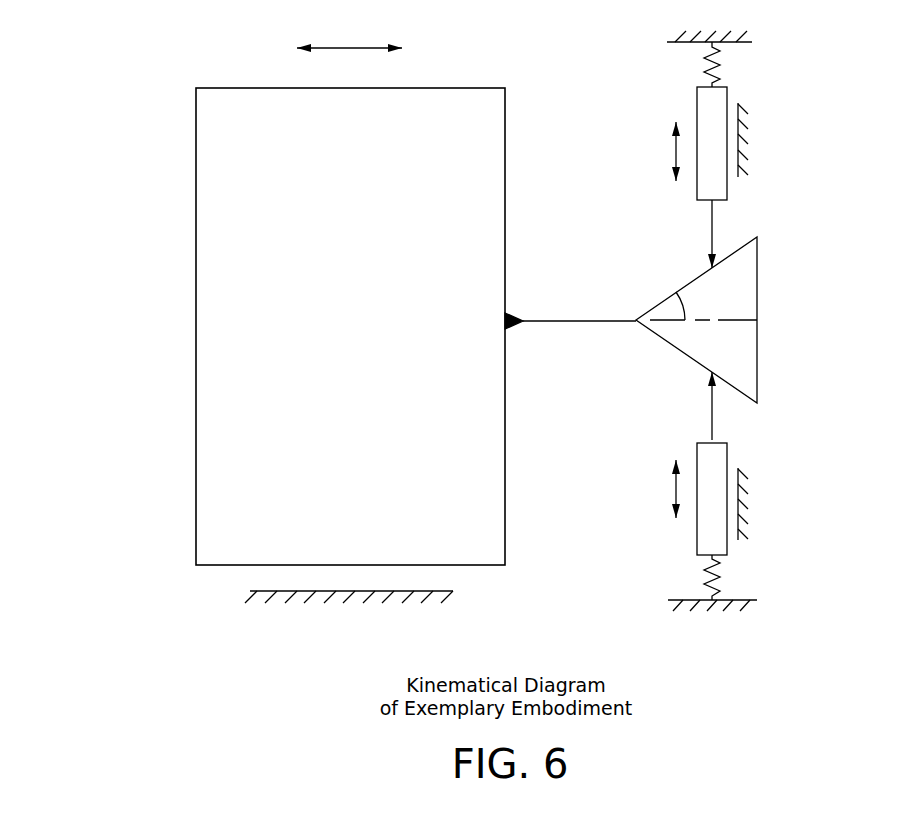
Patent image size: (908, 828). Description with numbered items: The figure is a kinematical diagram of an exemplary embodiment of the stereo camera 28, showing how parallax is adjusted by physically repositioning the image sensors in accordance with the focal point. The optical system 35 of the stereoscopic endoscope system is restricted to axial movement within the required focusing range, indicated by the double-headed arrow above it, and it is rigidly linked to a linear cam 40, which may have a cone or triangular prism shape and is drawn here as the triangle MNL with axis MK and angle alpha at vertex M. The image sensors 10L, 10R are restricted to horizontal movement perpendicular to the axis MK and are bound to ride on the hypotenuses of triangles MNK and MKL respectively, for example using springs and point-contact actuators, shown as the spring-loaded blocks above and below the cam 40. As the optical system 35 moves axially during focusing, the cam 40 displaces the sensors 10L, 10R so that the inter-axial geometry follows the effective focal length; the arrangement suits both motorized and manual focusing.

The right image sensor 10R is at (728, 93).
The left image sensor 10L is at (728, 548).
The linear cam 40 is at (762, 288).
The optical system 35 is at (196, 507).
The stereo camera 28 is at (143, 633).